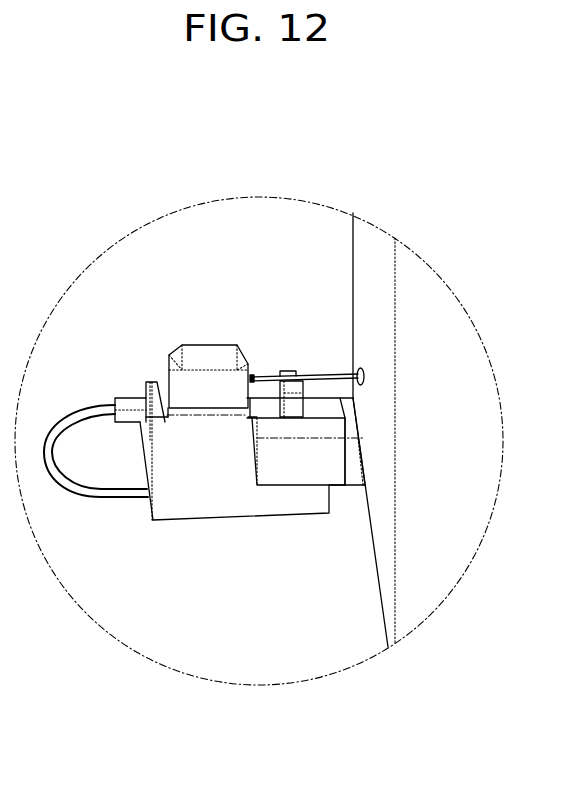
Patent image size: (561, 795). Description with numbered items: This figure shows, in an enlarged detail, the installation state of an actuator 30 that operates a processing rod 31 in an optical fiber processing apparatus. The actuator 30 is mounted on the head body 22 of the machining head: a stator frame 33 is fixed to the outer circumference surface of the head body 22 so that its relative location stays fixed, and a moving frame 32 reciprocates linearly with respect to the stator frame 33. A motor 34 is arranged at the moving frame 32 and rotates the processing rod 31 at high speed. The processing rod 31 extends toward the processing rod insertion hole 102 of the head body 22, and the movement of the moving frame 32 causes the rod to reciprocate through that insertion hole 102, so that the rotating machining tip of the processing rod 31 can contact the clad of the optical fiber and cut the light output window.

The actuator 30 is at (287, 292).
The processing rod 31 is at (307, 378).
The moving frame 32 is at (205, 362).
The stator frame 33 is at (166, 420).
The motor 34 is at (252, 376).
The processing rod insertion hole 102 is at (360, 370).
The head body 22 is at (385, 543).